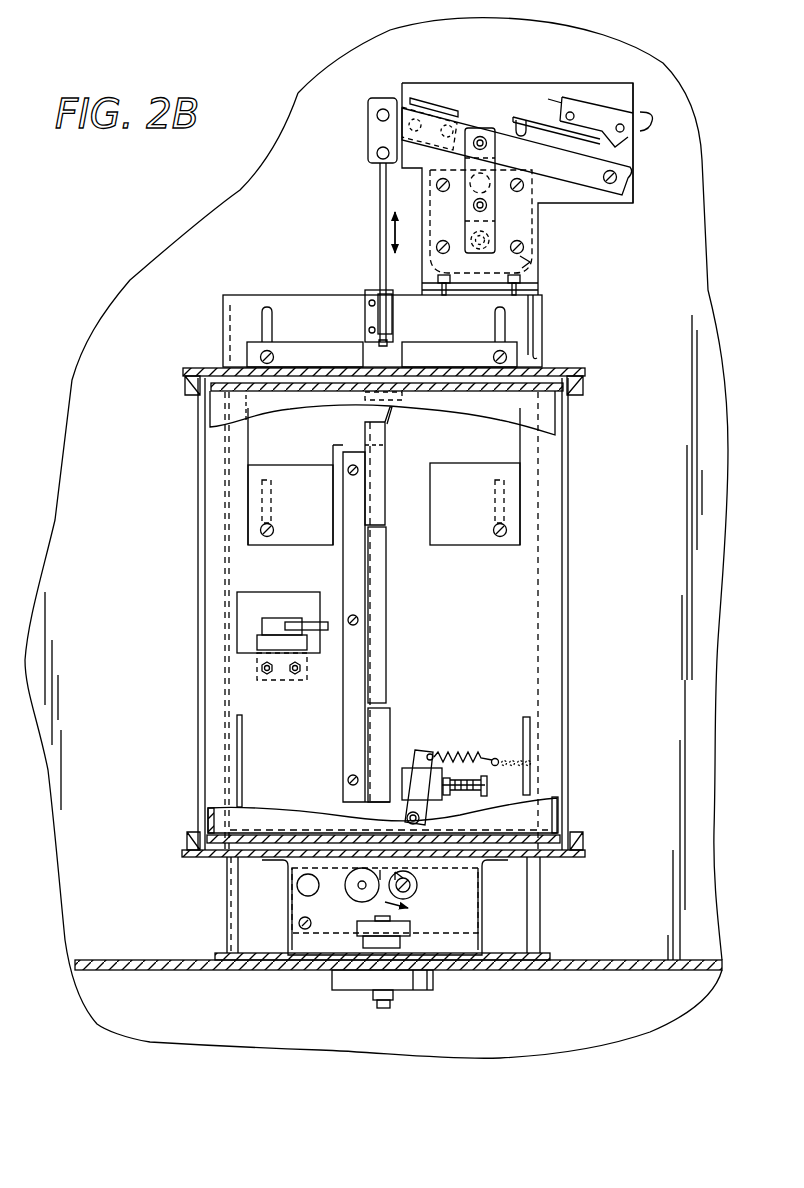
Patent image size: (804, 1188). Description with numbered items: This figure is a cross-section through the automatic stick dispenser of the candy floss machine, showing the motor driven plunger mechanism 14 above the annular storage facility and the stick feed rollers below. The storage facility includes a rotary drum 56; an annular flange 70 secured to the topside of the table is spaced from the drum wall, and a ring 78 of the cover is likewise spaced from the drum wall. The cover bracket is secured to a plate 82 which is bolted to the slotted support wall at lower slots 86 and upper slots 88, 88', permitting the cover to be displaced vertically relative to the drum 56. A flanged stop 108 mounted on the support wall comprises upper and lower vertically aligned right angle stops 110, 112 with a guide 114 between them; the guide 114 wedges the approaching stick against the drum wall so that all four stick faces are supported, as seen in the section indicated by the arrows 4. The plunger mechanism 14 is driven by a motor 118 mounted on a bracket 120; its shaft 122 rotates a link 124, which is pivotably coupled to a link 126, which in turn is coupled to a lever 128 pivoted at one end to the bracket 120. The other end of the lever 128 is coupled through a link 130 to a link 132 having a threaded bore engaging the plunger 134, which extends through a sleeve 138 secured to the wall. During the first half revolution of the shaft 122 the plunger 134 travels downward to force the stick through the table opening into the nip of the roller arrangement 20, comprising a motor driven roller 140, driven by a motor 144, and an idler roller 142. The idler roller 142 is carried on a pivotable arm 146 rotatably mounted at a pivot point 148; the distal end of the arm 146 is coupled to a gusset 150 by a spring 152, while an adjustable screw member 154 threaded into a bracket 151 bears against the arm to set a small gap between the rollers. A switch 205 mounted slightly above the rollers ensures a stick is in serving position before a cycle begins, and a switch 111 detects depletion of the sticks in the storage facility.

The plunger mechanism 14 is at (598, 58).
The bracket 120 is at (503, 83).
The lever 128 is at (618, 191).
The motor 118 is at (545, 278).
The link 126 is at (493, 204).
The link 124 is at (497, 228).
The shaft 122 is at (530, 259).
The link 130 is at (380, 152).
The link 132 is at (374, 161).
The plunger 134 is at (381, 225).
The upper slot 88 is at (305, 337).
The upper slot 88' is at (498, 337).
The sleeve 138 is at (388, 326).
The ring 78 is at (185, 387).
The rotary drum 56 is at (560, 422).
The plate 82 is at (308, 515).
The lower slot 86 is at (266, 487).
The section line 4- 4 is at (345, 498).
The flanged stop 108 is at (392, 658).
The upper right angle stop 110 is at (392, 458).
The guide 114 is at (386, 609).
The lower right angle stop 112 is at (393, 712).
The switch 111 is at (275, 622).
The gusset 150 is at (525, 742).
The pivotable arm 146 is at (415, 760).
The spring 152 is at (470, 753).
The bracket 151 is at (434, 796).
The pivot point 148 is at (410, 821).
The motor 144 is at (297, 832).
The adjustable screw member 154 is at (440, 822).
The ring or annular flange 70 is at (192, 833).
The roller arrangement 20 is at (336, 866).
The motor driven roller 140 is at (359, 899).
The idler roller 142 is at (410, 891).
The switch 205 is at (408, 876).